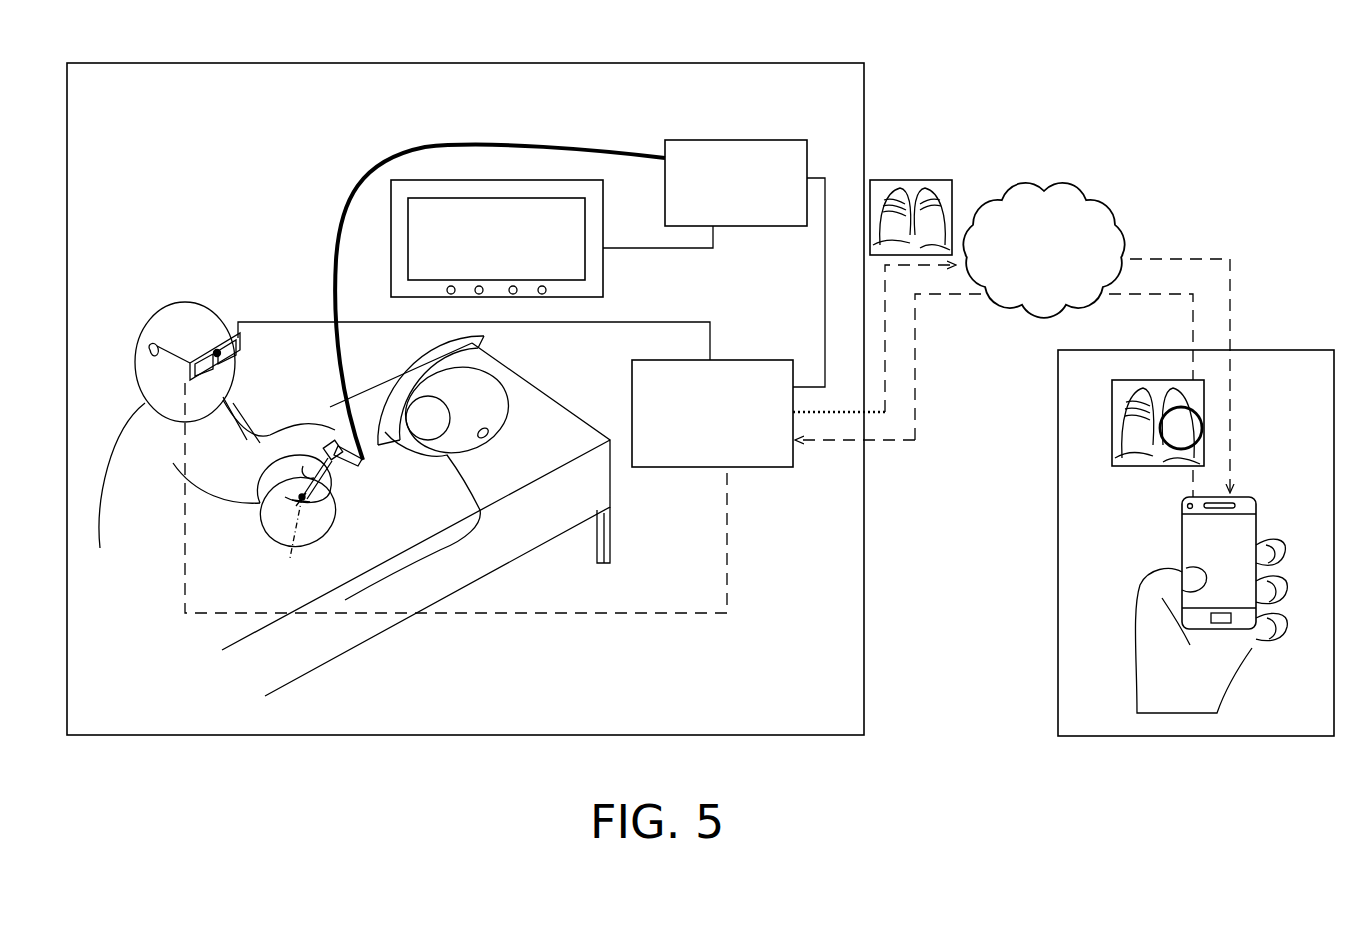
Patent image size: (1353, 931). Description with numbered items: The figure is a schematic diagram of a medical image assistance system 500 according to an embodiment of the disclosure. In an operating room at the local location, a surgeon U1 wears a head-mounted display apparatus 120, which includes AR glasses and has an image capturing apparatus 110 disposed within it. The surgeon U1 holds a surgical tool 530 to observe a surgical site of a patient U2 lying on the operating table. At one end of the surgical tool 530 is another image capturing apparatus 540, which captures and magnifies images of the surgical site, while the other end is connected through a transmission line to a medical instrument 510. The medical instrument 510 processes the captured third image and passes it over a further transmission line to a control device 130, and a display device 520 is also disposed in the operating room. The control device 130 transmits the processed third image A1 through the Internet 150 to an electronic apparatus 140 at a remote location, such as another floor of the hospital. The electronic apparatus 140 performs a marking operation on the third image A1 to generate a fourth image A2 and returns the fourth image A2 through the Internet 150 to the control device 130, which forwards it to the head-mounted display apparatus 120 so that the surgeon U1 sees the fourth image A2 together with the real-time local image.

The medical image assistance system 500 is at (1198, 87).
The medical instrument 510 is at (727, 140).
The display device 520 is at (577, 266).
The surgical tool 530 is at (332, 437).
The image capturing apparatus 540 is at (290, 548).
The image capturing apparatus 110 is at (218, 350).
The head-mounted display apparatus 120 is at (192, 345).
The control device 130 is at (762, 360).
The electronic apparatus 140 is at (1257, 506).
The Internet 150 is at (1062, 180).
The surgeon U1 is at (198, 305).
The patient U2 is at (497, 387).
The third image A1 is at (928, 180).
The fourth image A2 is at (1126, 468).